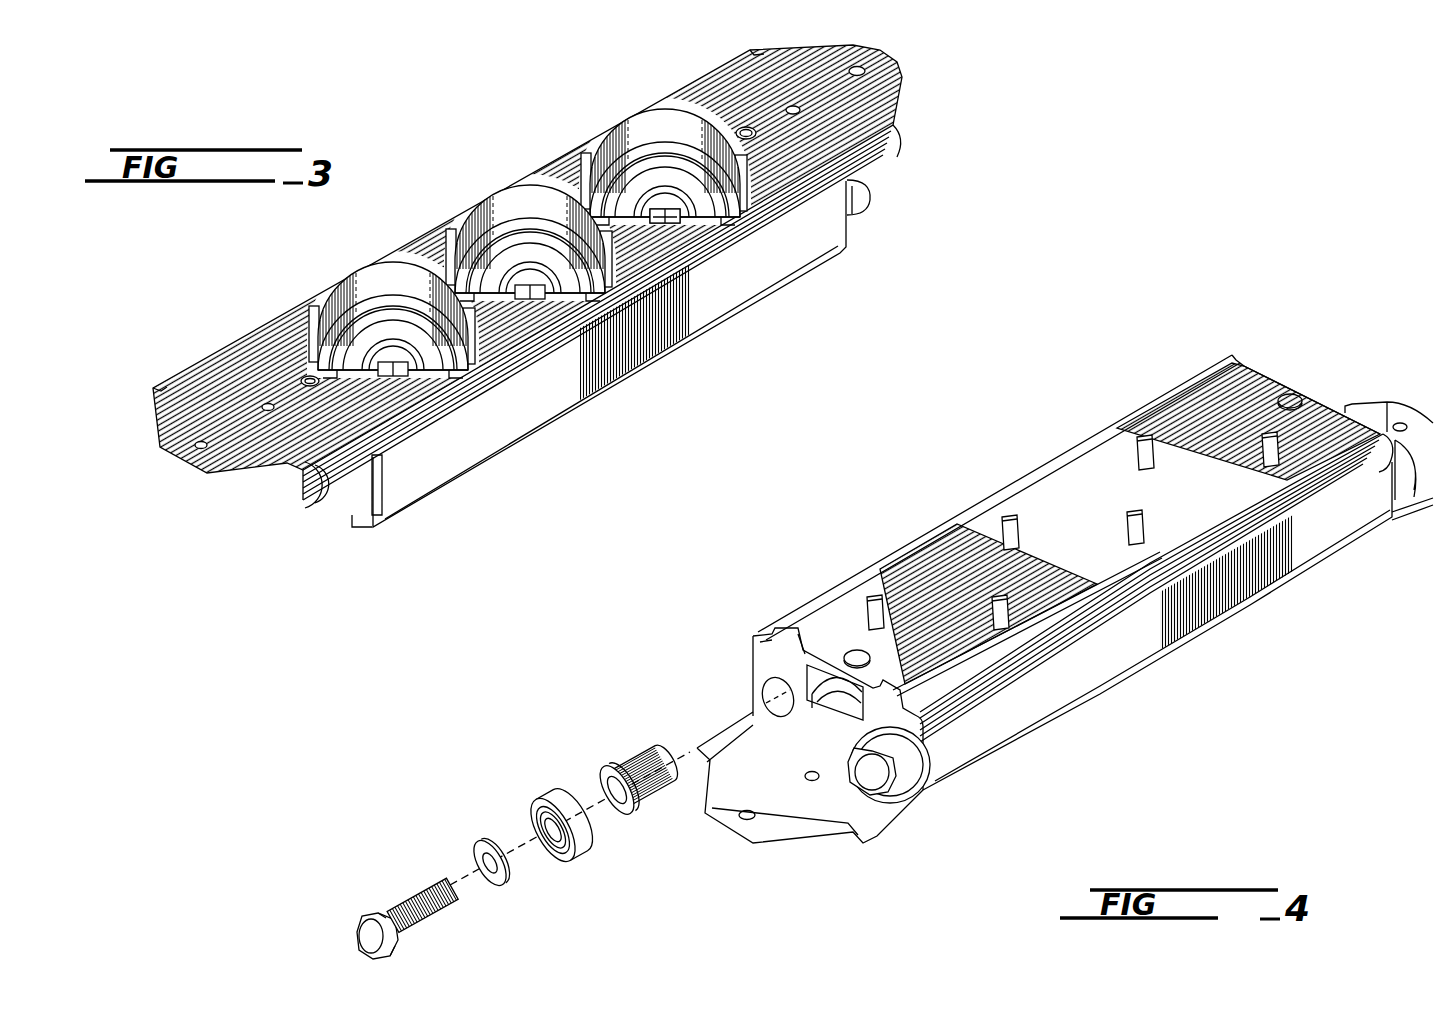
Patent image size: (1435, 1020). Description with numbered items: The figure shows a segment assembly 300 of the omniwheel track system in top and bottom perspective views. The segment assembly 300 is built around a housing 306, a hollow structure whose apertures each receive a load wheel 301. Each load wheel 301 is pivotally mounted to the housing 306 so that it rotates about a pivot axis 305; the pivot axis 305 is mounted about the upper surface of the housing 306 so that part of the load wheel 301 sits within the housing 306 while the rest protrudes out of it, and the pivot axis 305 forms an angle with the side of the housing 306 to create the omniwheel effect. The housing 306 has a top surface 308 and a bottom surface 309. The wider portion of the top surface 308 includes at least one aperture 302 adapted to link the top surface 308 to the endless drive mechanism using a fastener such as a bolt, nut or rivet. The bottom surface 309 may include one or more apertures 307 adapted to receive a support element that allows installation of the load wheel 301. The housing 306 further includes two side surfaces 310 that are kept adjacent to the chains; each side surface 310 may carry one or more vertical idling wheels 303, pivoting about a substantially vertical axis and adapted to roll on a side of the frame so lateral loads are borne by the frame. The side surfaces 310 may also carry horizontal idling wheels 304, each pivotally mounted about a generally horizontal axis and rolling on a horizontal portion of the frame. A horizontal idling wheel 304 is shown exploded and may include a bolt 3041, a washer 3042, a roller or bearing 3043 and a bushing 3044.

In FIG. 3, the segment assembly 300 is at (610, 320).
In FIG. 3, the load wheel 301 is at (500, 186).
In FIG. 3, the aperture 302 is at (268, 413).
In FIG. 3, the vertical idling wheel 303 is at (310, 368).
In FIG. 4, the vertical idling wheel 303 is at (824, 710).
In FIG. 4, the horizontal idling wheel 304 is at (908, 770).
In FIG. 3, the pivot axis 305 is at (668, 226).
In FIG. 3, the housing 306 is at (500, 415).
In FIG. 4, the apertures 307 is at (1013, 617).
In FIG. 3, the top surface 308 is at (827, 133).
In FIG. 4, the bottom surface 309 is at (1182, 436).
In FIG. 4, the side surface 310 is at (842, 732).
In FIG. 4, the bolt 3041 is at (403, 896).
In FIG. 4, the washer 3042 is at (481, 838).
In FIG. 4, the bearing 3043 is at (547, 785).
In FIG. 4, the bushing 3044 is at (632, 752).